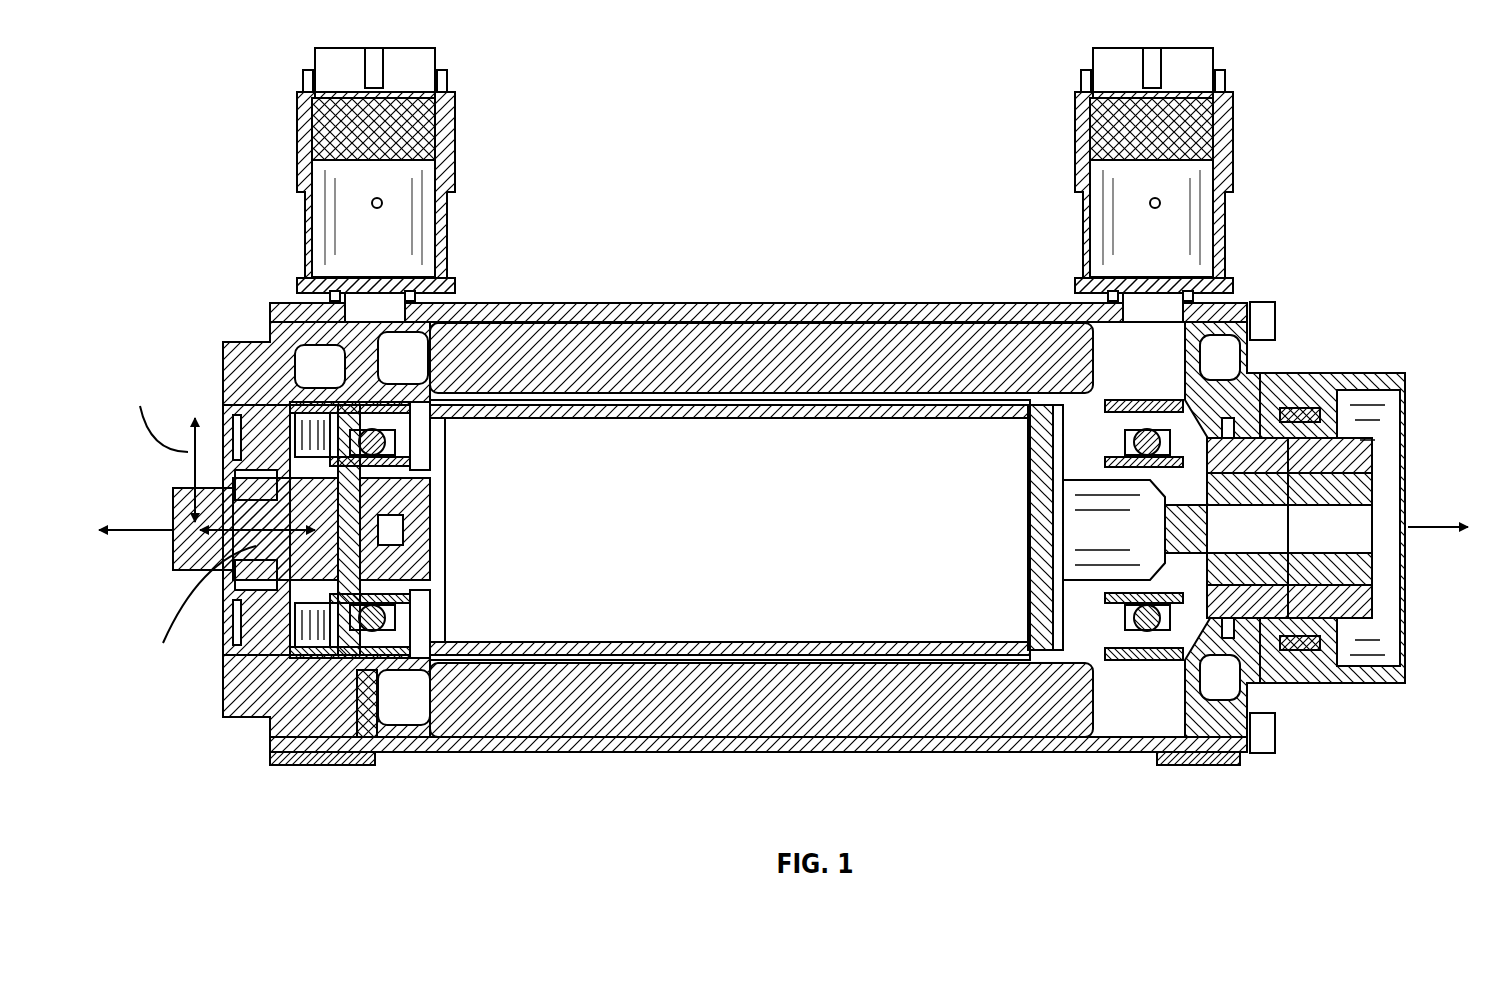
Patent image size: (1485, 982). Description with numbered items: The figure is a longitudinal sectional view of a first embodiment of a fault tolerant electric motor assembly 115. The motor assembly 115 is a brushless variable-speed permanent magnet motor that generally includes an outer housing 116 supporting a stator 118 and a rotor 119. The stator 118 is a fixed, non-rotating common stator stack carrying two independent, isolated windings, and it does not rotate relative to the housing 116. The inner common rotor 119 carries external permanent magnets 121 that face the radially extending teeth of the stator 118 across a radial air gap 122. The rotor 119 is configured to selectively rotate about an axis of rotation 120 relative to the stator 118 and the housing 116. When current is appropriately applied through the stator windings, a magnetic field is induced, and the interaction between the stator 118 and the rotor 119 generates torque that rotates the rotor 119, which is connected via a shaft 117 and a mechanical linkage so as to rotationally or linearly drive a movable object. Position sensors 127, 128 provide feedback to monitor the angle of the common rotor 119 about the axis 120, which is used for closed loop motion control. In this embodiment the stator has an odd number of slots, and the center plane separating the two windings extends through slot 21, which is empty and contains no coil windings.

The fault tolerant motor assembly 115 is at (787, 430).
The outer housing 116 is at (1108, 756).
The shaft 117 is at (1390, 511).
The stator 118 is at (976, 330).
The rotor 119 is at (869, 421).
The axis of rotation 120 is at (123, 535).
The permanent magnets 121 is at (690, 653).
The radial air gap 122 is at (626, 402).
The position sensor 127 is at (1247, 624).
The position sensor 128 is at (1340, 624).
The slot 21 is at (761, 700).